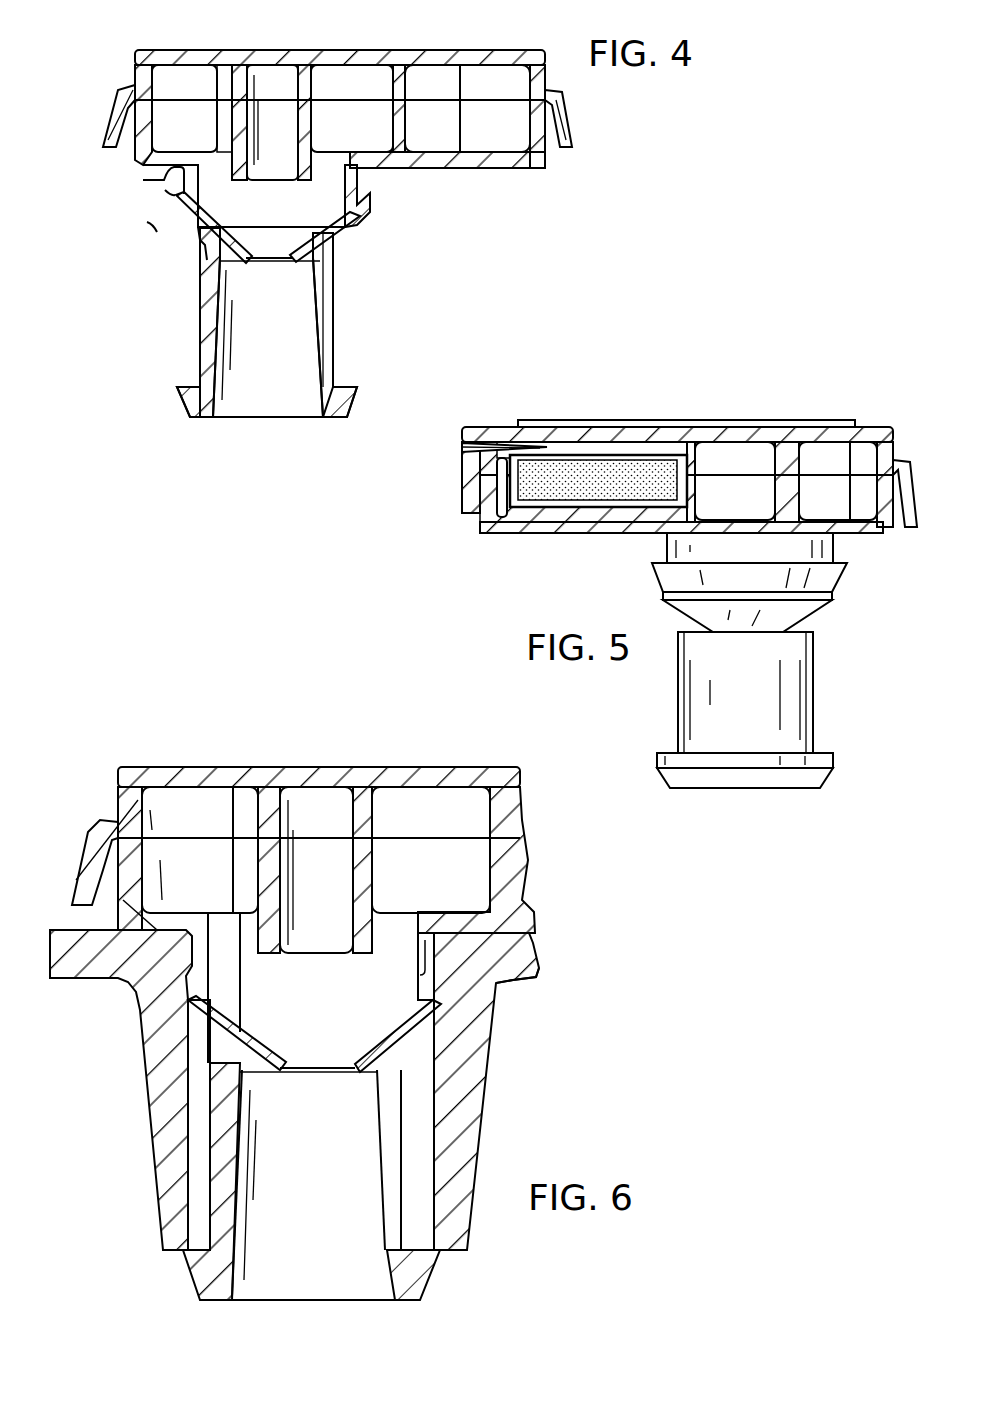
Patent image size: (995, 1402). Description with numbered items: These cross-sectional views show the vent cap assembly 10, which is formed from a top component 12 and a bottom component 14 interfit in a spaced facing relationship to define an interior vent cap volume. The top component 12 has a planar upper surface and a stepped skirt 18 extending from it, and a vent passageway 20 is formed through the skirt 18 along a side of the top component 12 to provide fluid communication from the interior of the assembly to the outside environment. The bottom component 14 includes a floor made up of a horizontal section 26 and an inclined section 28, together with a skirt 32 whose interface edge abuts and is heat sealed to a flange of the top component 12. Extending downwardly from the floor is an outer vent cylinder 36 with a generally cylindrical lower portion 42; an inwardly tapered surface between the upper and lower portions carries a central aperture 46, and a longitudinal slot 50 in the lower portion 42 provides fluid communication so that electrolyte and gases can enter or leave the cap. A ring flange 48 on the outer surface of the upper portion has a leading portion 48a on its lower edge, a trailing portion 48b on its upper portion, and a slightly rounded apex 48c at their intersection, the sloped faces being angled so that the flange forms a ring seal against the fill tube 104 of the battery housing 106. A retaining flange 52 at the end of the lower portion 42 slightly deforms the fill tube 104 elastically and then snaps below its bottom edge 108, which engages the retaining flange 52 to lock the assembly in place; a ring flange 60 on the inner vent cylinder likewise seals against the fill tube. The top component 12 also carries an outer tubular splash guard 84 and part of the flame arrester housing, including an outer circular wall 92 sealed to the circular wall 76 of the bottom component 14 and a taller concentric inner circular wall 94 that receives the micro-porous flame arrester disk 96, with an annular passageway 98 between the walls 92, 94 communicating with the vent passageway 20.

In FIG. 4, the vent cap assembly 10 is at (134, 46).
In FIG. 4, the top component 12 is at (428, 40).
In FIG. 5, the top component 12 is at (689, 476).
In FIG. 6, the top component 12 is at (284, 746).
In FIG. 4, the bottom component 14 is at (432, 182).
In FIG. 6, the bottom component 14 is at (553, 920).
In FIG. 4, the stepped skirt 18 is at (104, 128).
In FIG. 5, the vent passageway 20 is at (462, 447).
In FIG. 4, the horizontal section 26 is at (178, 150).
In FIG. 4, the inclined section 28 is at (479, 152).
In FIG. 4, the skirt 32 is at (539, 148).
In FIG. 4, the outer vent cylinder 36 is at (257, 323).
In FIG. 5, the lower portion 42 is at (813, 694).
In FIG. 4, the central aperture 46 is at (261, 262).
In FIG. 6, the central aperture 46 is at (282, 1068).
In FIG. 4, the ring flange 48 is at (378, 226).
In FIG. 6, the ring flange 48 is at (140, 1000).
In FIG. 4, the leading portion 48a is at (180, 218).
In FIG. 4, the trailing portion 48b is at (181, 186).
In FIG. 4, the apex 48c is at (182, 210).
In FIG. 4, the longitudinal slot 50 is at (330, 314).
In FIG. 6, the longitudinal slot 50 is at (380, 1202).
In FIG. 4, the retaining flange 52 is at (349, 398).
In FIG. 5, the retaining flange 52 is at (830, 774).
In FIG. 6, the retaining flange 52 is at (437, 1282).
In FIG. 5, the ring flange 60 is at (845, 577).
In FIG. 5, the circular wall 76 is at (705, 492).
In FIG. 6, the outer tubular splash guard 84 is at (361, 824).
In FIG. 5, the outer circular wall 92 is at (708, 450).
In FIG. 5, the inner circular wall 94 is at (682, 502).
In FIG. 5, the flame arrester disk 96 is at (582, 492).
In FIG. 5, the annular passageway 98 is at (502, 505).
In FIG. 6, the fill tube 104 is at (488, 1117).
In FIG. 6, the battery housing 106 is at (515, 986).
In FIG. 6, the bottom edge 108 is at (446, 1252).